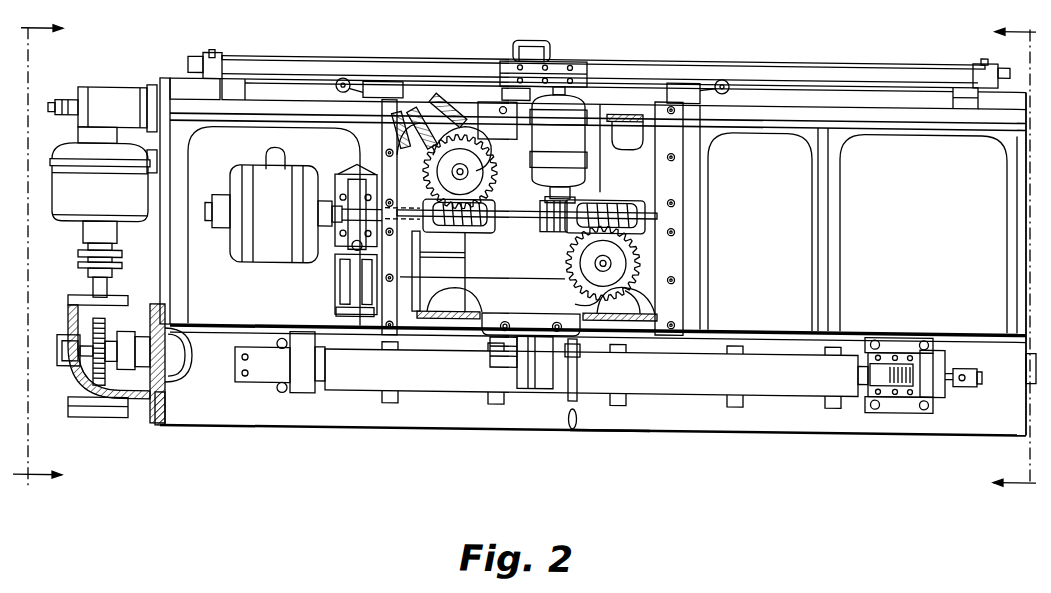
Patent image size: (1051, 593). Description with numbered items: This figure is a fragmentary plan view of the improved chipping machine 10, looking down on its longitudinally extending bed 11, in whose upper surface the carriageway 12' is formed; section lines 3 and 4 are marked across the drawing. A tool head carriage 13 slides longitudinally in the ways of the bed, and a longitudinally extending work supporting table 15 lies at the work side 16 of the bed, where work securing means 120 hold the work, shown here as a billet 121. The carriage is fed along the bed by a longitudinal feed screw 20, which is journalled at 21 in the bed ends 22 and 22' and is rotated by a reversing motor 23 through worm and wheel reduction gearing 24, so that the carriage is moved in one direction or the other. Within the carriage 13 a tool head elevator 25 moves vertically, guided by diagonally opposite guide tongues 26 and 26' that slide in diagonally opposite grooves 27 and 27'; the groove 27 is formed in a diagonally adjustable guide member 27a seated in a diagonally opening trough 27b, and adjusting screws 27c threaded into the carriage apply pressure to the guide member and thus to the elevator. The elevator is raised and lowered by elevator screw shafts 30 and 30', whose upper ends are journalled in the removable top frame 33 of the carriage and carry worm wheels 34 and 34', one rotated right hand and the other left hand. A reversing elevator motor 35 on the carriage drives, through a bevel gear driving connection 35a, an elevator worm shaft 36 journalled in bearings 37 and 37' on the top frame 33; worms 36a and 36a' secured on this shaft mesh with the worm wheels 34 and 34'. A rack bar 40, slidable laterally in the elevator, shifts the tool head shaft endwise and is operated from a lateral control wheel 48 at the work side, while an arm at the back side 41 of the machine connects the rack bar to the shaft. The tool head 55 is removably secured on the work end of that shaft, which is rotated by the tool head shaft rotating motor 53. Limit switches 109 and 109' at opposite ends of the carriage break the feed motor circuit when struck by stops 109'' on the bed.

The section line 3- 3 is at (36, 253).
The section line 4- 4 is at (1014, 249).
The chipping machine 10 is at (668, 55).
The bed 11 is at (863, 321).
The carriageway 12' is at (593, 206).
The tool head carriage 13 is at (703, 264).
The work supporting table 15 is at (738, 411).
The work side 16 is at (608, 436).
The feed screw 20 is at (183, 396).
The journal 21 is at (168, 402).
The bed end 22 is at (155, 428).
The bed end 22' is at (1004, 264).
The reversing motor 23 is at (72, 214).
The worm and wheel reduction gearing 24 is at (80, 397).
The tool head elevator 25 is at (468, 296).
The guide tongue 26 is at (468, 148).
The guide tongue 26' is at (513, 299).
The groove 27 is at (457, 134).
The groove 27' is at (628, 300).
The diagonally adjustable guide member 27a is at (433, 95).
The diagonally opening trough 27b is at (455, 90).
The adjusting screws 27c is at (412, 96).
The elevator screw shaft 30 is at (474, 170).
The elevator screw shaft 30' is at (603, 263).
The top frame 33 is at (633, 187).
The worm wheel 34 is at (472, 172).
The worm wheel 34' is at (589, 263).
The reversing elevator motor 35 is at (558, 148).
The bevel gear driving connection 35a is at (546, 211).
The elevator worm shaft 36 is at (507, 213).
The worm 36a is at (457, 237).
The worm 36a' is at (625, 217).
The bearing 37 is at (460, 239).
The bearing 37' is at (629, 199).
The rack bar 40 is at (516, 85).
The back side 41 is at (580, 53).
The lateral control wheel 48 is at (573, 364).
The tool head shaft rotating motor 53 is at (240, 244).
The tool head 55 is at (507, 345).
The limit switch 109 is at (369, 89).
The limit switch 109' is at (697, 92).
The stops 109'' is at (599, 57).
The work securing means 120 is at (866, 378).
The billet 121 is at (591, 375).